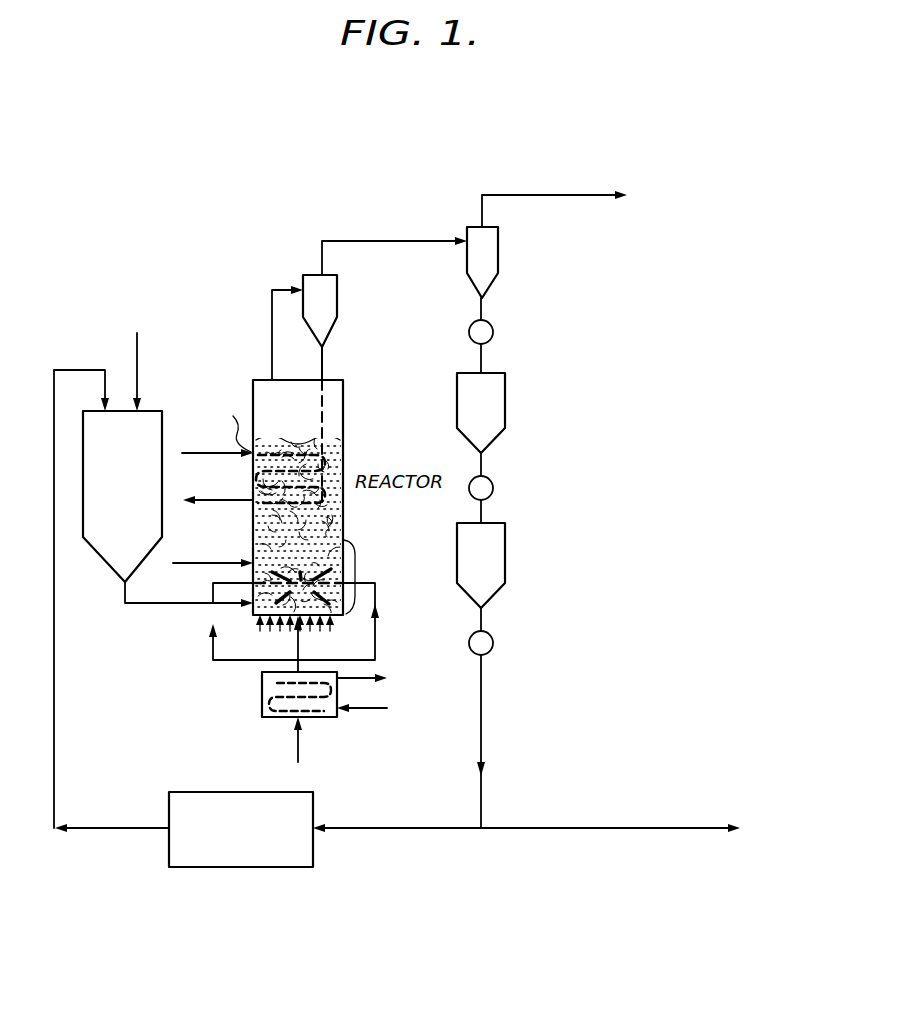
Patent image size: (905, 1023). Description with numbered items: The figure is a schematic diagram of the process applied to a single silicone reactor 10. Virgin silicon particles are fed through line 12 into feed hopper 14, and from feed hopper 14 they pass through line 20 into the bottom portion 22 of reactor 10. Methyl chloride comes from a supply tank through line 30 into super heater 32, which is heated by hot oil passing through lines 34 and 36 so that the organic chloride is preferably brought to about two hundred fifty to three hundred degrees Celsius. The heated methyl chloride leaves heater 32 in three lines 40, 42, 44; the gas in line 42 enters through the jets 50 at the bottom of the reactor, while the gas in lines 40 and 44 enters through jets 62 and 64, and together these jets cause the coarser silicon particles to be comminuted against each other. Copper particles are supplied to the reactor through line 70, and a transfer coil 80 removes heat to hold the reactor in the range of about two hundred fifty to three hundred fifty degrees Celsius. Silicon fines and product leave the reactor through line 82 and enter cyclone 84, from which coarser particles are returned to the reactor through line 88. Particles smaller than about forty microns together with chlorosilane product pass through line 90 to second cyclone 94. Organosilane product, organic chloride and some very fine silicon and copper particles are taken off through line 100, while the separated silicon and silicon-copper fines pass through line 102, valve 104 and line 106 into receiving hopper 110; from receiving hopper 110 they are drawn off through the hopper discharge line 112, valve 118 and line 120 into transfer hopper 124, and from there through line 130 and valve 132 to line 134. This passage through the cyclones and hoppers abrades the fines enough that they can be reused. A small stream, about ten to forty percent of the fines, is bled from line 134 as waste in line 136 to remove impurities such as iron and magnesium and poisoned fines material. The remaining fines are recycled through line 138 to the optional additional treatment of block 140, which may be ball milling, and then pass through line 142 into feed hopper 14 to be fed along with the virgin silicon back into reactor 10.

The silicone reactor 10 is at (343, 415).
The line 12 is at (137, 350).
The feed hopper 14 is at (100, 410).
The line 20 is at (125, 590).
The bottom portion 22 is at (355, 575).
The line 30 is at (298, 736).
The super heater 32 is at (325, 717).
The line 34 is at (387, 710).
The line 36 is at (387, 679).
The line 40 is at (213, 642).
The line 42 is at (298, 649).
The line 44 is at (375, 637).
The jets 50 is at (284, 638).
The jet 62 is at (253, 575).
The jet 64 is at (302, 584).
The line 70 is at (175, 565).
The transfer coil 80 is at (228, 453).
The line 82 is at (272, 306).
The cyclone 84 is at (335, 330).
The line 88 is at (322, 365).
The line 90 is at (400, 241).
The second cyclone 94 is at (505, 228).
The line 100 is at (600, 195).
The line 102 is at (483, 308).
The valve 104 is at (493, 331).
The line 106 is at (483, 362).
The receiving hopper 110 is at (457, 386).
The fines receiving hopper discharge line 112 is at (483, 468).
The valve 118 is at (493, 488).
The line 120 is at (483, 513).
The transfer hopper 124 is at (460, 528).
The line 130 is at (483, 622).
The valve 132 is at (493, 643).
The line 134 is at (483, 718).
The line 136 is at (668, 830).
The line 138 is at (394, 826).
The block 140 is at (206, 792).
The line 142 is at (118, 828).